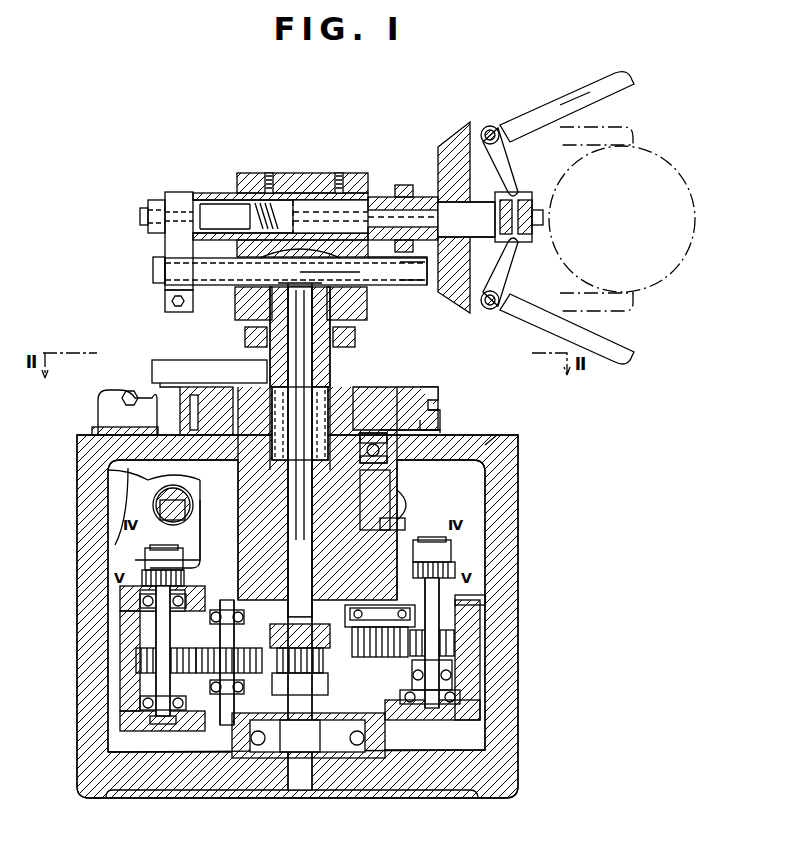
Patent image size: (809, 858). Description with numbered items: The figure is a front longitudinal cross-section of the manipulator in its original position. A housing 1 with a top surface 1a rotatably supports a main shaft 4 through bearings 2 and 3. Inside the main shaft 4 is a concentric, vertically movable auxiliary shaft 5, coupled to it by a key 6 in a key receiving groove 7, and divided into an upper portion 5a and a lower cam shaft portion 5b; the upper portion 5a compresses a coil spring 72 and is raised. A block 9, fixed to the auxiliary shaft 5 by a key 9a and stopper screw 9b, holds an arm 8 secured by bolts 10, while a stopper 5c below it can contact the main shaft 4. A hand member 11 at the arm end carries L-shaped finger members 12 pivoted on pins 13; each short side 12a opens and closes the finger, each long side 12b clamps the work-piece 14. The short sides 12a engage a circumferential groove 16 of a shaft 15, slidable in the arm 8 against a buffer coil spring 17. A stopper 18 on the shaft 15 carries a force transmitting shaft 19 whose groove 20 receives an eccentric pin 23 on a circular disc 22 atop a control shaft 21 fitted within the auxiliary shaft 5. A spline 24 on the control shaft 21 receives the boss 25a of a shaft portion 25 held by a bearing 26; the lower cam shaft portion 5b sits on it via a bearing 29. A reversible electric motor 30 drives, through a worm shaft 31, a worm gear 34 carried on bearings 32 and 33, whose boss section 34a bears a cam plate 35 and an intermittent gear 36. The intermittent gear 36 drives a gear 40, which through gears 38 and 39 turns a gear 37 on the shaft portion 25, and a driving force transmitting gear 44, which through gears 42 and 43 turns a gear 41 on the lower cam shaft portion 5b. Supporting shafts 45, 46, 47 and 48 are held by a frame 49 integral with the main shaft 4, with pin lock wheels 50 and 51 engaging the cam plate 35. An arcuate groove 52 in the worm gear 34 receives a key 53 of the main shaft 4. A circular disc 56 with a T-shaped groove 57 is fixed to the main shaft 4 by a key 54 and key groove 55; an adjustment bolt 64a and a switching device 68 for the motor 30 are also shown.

The housing 1 is at (76, 468).
The top surface of the housing 1a is at (497, 437).
The bearing 2 is at (436, 412).
The bearing 3 is at (340, 760).
The main shaft 4 is at (400, 392).
The auxiliary shaft 5 is at (350, 368).
The upper portion of the auxiliary shaft 5a is at (153, 498).
The lower cam shaft portion 5b is at (220, 650).
The stopper 5c is at (358, 340).
The key 6 is at (276, 435).
The key receiving groove 7 is at (278, 385).
The arm 8 is at (318, 200).
The block 9 is at (247, 173).
The key 9a is at (252, 318).
The stopper screw 9b is at (360, 313).
The bolts 10 is at (339, 173).
The hand member 11 is at (455, 130).
The finger members 12 is at (612, 75).
The short side 12a is at (500, 270).
The long side 12b is at (555, 95).
The pins 13 is at (493, 307).
The work-piece 14 is at (645, 292).
The shaft for the finger member opening-and-closing operations 15 is at (393, 197).
The circumferential groove 16 is at (533, 210).
The buffer coil spring 17 is at (232, 192).
The stopper 18 is at (160, 234).
The force transmitting shaft 19 is at (400, 275).
The groove 20 is at (280, 272).
The control shaft 21 is at (312, 352).
The circular disc 22 is at (262, 300).
The eccentric pin 23 is at (330, 270).
The spline 24 is at (398, 528).
The shaft portion 25 is at (300, 760).
The boss 25a is at (215, 700).
The bearing 26 is at (285, 700).
The bearing 29 is at (260, 690).
The reversible electric motor 30 is at (100, 428).
The worm shaft 31 is at (150, 508).
The bearing 32 is at (200, 478).
The bearing 33 is at (120, 640).
The worm gear 34 is at (160, 520).
The boss section 34a is at (145, 560).
The cam plate 35 is at (451, 553).
The intermittent gear 36 is at (470, 650).
The gear 37 is at (370, 760).
The gear 38 is at (136, 660).
The gear 39 is at (156, 690).
The gear 40 is at (120, 600).
The gear 41 is at (140, 706).
The gear 42 is at (485, 705).
The gear 43 is at (440, 700).
The driving force transmitting gear 44 is at (408, 640).
The supporting shaft 45 is at (140, 600).
The supporting shaft 46 is at (160, 722).
The supporting shaft 47 is at (430, 705).
The supporting shaft 48 is at (480, 680).
The frame 49 is at (455, 645).
The pin lock wheel 50 is at (142, 580).
The pin lock wheel 51 is at (455, 570).
The arcuate groove 52 is at (410, 500).
The key 53 is at (405, 524).
The key 54 is at (152, 378).
The key groove 55 is at (215, 385).
The circular disc 56 is at (440, 430).
The T-shaped groove 57 is at (432, 390).
The adjustment bolt 64a is at (122, 398).
The switching device 68 is at (194, 395).
The coil spring 72 is at (387, 478).